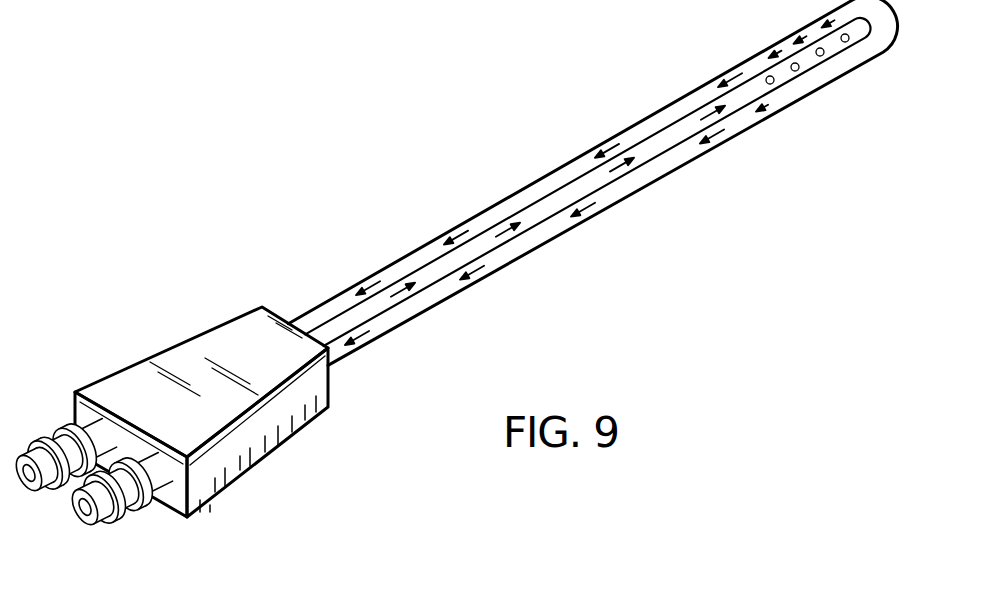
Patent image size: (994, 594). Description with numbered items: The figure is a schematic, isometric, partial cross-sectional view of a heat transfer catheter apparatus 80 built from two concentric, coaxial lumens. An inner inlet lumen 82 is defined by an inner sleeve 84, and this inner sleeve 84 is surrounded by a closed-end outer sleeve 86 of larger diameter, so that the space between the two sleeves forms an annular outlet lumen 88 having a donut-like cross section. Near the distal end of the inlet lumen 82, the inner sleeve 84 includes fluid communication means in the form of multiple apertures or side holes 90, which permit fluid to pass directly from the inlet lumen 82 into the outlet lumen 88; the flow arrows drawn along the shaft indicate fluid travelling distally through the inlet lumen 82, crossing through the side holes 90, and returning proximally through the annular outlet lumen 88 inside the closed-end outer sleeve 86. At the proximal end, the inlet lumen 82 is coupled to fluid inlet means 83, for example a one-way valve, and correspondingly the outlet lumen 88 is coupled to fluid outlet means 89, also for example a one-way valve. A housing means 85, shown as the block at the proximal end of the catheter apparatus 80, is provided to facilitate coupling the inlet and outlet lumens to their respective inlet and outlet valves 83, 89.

The catheter apparatus 80 is at (502, 149).
The inner inlet lumen 82 is at (642, 150).
The fluid inlet means 83 is at (34, 442).
The inner sleeve 84 is at (678, 115).
The housing means 85 is at (199, 336).
The outer sleeve 86 is at (705, 80).
The annular outlet lumen 88 is at (755, 65).
The fluid outlet means 89 is at (112, 521).
The side holes 90 is at (848, 42).